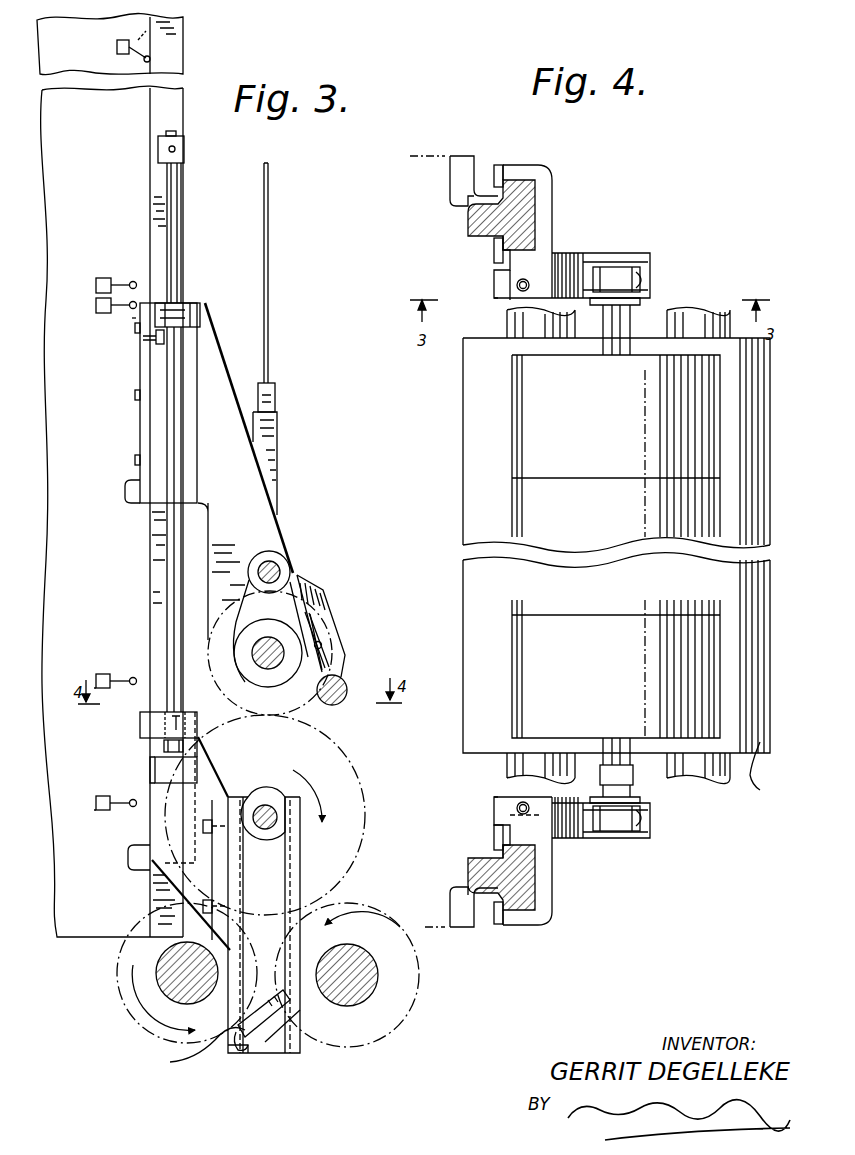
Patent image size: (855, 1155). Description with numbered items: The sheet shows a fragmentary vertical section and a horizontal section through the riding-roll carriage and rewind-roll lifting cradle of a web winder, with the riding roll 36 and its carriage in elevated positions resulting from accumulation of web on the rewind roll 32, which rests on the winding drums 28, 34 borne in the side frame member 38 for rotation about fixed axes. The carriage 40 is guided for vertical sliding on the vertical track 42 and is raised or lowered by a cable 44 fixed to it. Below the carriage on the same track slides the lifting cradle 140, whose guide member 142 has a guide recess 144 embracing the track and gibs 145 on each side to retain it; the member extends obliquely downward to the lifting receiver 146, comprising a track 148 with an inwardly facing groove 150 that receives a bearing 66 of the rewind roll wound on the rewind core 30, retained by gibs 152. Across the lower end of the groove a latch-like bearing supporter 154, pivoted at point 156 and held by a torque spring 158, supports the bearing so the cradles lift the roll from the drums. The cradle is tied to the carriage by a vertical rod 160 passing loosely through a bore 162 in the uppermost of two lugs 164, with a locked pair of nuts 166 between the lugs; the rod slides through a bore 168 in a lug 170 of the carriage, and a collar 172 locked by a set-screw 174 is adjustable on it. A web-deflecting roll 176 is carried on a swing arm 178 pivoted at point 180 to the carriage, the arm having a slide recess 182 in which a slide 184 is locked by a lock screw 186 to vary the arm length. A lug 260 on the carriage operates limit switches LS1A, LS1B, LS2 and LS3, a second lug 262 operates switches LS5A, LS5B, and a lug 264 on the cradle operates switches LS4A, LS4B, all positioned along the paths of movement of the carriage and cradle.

In FIG. 3, the winding drum 28 is at (420, 988).
In FIG. 4, the winding drum 28 is at (765, 766).
In FIG. 3, the rewind core 30 is at (265, 805).
In FIG. 3, the rewind roll 32 is at (352, 787).
In FIG. 4, the rewind roll 32 is at (532, 414).
In FIG. 3, the winding drum 34 is at (118, 995).
In FIG. 3, the riding roll 36 is at (222, 618).
In FIG. 3, the side frame member 38 is at (56, 535).
In FIG. 4, the side frame member 38 is at (436, 158).
In FIG. 3, the carriage 40 is at (258, 497).
In FIG. 3, the track 42 is at (173, 108).
In FIG. 4, the track 42 is at (525, 204).
In FIG. 3, the cable 44 is at (269, 337).
In FIG. 3, the bearing 66 is at (280, 832).
In FIG. 4, the bearing 66 is at (622, 267).
In FIG. 3, the lifting cradle 140 is at (165, 892).
In FIG. 4, the lifting cradle 140 is at (506, 303).
In FIG. 3, the guide member 142 is at (158, 824).
In FIG. 4, the guide member 142 is at (545, 226).
In FIG. 4, the guide recess 144 is at (536, 172).
In FIG. 3, the gib 145 is at (150, 776).
In FIG. 4, the gib 145 is at (486, 170).
In FIG. 3, the lifting receiver 146 is at (312, 888).
In FIG. 4, the lifting receiver 146 is at (658, 258).
In FIG. 3, the track 148 is at (296, 1013).
In FIG. 4, the track 148 is at (652, 270).
In FIG. 4, the groove 150 is at (645, 280).
In FIG. 3, the gib 152 is at (248, 1055).
In FIG. 4, the gib 152 is at (644, 300).
In FIG. 3, the bearing supporter 154 is at (296, 1045).
In FIG. 3, the pivot point 156 is at (238, 1055).
In FIG. 3, the torque spring 158 is at (186, 1058).
In FIG. 3, the rod 160 is at (172, 436).
In FIG. 3, the bore 162 is at (200, 734).
In FIG. 3, the lug 164 is at (160, 725).
In FIG. 3, the nut 166 is at (185, 748).
In FIG. 3, the bore 168 is at (186, 288).
In FIG. 3, the lug 170 is at (200, 312).
In FIG. 3, the collar 172 is at (184, 149).
In FIG. 3, the set-screw 174 is at (158, 148).
In FIG. 3, the web-deflecting roll 176 is at (340, 704).
In FIG. 3, the swing arm 178 is at (287, 563).
In FIG. 3, the pivot point 180 is at (261, 553).
In FIG. 3, the slide recess 182 is at (326, 588).
In FIG. 3, the slide 184 is at (330, 664).
In FIG. 3, the lock screw 186 is at (322, 645).
In FIG. 3, the lug 260 is at (130, 318).
In FIG. 3, the lug 262 is at (125, 491).
In FIG. 3, the lug 264 is at (128, 860).
In FIG. 3, the limit switch LS1A is at (96, 306).
In FIG. 3, the limit switch LS1B is at (80, 311).
In FIG. 3, the limit switch LS2 is at (96, 285).
In FIG. 3, the limit switch LS3 is at (117, 47).
In FIG. 3, the limit switch LS4A is at (96, 803).
In FIG. 3, the limit switch LS4B is at (60, 810).
In FIG. 3, the limit switch LS5A is at (96, 681).
In FIG. 3, the limit switch LS5B is at (60, 689).